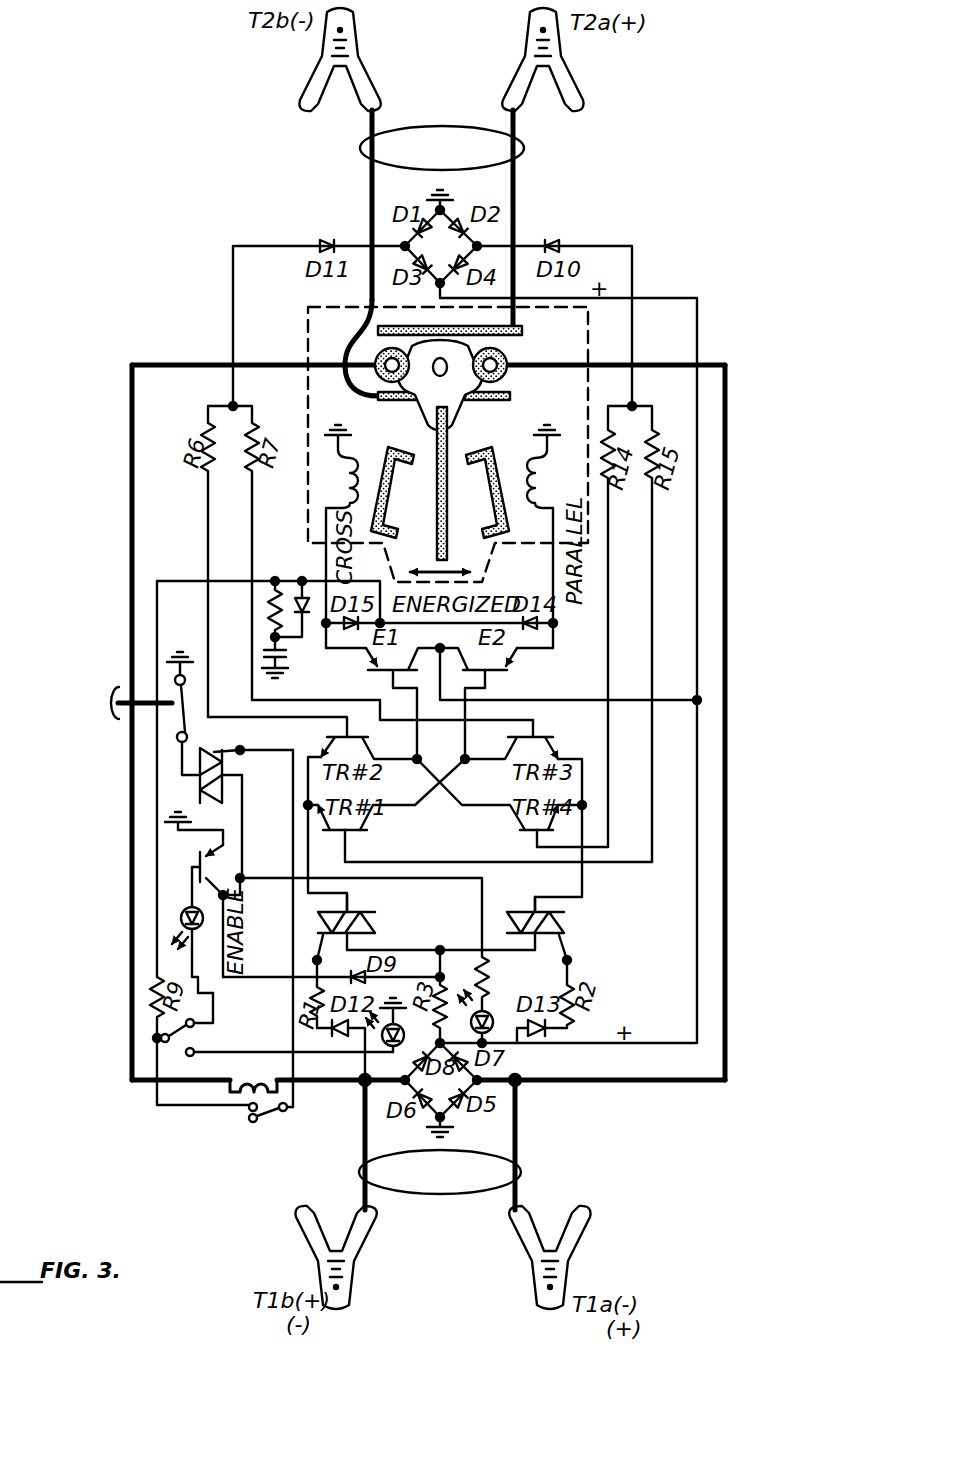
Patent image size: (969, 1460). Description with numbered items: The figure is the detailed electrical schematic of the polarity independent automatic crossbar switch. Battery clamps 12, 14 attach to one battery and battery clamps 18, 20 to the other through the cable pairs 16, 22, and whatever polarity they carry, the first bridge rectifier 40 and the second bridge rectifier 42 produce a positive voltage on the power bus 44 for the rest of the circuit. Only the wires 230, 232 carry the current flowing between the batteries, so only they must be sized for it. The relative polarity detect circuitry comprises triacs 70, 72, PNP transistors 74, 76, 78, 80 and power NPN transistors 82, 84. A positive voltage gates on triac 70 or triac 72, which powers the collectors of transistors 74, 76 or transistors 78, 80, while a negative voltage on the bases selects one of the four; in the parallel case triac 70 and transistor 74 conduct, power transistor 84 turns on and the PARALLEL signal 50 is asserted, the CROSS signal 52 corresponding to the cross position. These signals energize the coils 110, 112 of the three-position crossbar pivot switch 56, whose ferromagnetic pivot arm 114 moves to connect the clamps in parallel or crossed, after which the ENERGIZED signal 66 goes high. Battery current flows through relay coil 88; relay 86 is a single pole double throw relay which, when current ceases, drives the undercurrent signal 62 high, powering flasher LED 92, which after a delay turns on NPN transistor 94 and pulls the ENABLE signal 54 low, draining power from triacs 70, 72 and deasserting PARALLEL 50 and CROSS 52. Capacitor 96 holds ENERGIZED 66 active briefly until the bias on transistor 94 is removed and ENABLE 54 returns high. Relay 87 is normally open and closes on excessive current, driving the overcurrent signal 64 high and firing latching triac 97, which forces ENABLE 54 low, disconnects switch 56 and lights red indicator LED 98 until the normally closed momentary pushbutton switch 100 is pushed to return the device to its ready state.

The battery clamp 12 is at (380, 88).
The battery clamp 14 is at (582, 96).
The cable pair to second battery 16 is at (524, 150).
The battery clamp 18 is at (372, 1238).
The battery clamp 20 is at (583, 1238).
The cable pair to first battery 22 is at (358, 1172).
The first bridge rectifier 40 is at (450, 215).
The second bridge rectifier 42 is at (448, 1118).
The power bus 44 is at (647, 298).
The PARALLEL signal 50 is at (558, 625).
The CROSS signal 52 is at (320, 565).
The ENABLE signal 54 is at (316, 862).
The crossbar pivot switch 56 is at (306, 345).
The undercurrent signal U_CURRENT 62 is at (216, 990).
The overcurrent signal O_CURRENT 64 is at (298, 1068).
The ENERGIZED signal 66 is at (472, 630).
The triac 70 is at (378, 910).
The triac 72 is at (567, 910).
The PNP transistor 74 is at (362, 838).
The PNP transistor 76 is at (372, 756).
The PNP transistor 78 is at (506, 752).
The PNP transistor 80 is at (518, 842).
The power NPN transistor 82 is at (378, 680).
The power NPN transistor 84 is at (510, 680).
The relay 86 is at (196, 1040).
The relay 87 is at (242, 1122).
The relay coil 88 is at (230, 1084).
The flasher LED 92 is at (182, 948).
The NPN transistor 94 is at (192, 846).
The capacitor 96 is at (283, 655).
The triac 97 is at (214, 756).
The red indicator LED 98 is at (486, 1000).
The pushbutton switch 100 is at (118, 703).
The coil 110 is at (540, 465).
The coil 112 is at (352, 448).
The pivot arm 114 is at (448, 500).
The wire 230 is at (725, 452).
The wire 232 is at (132, 430).